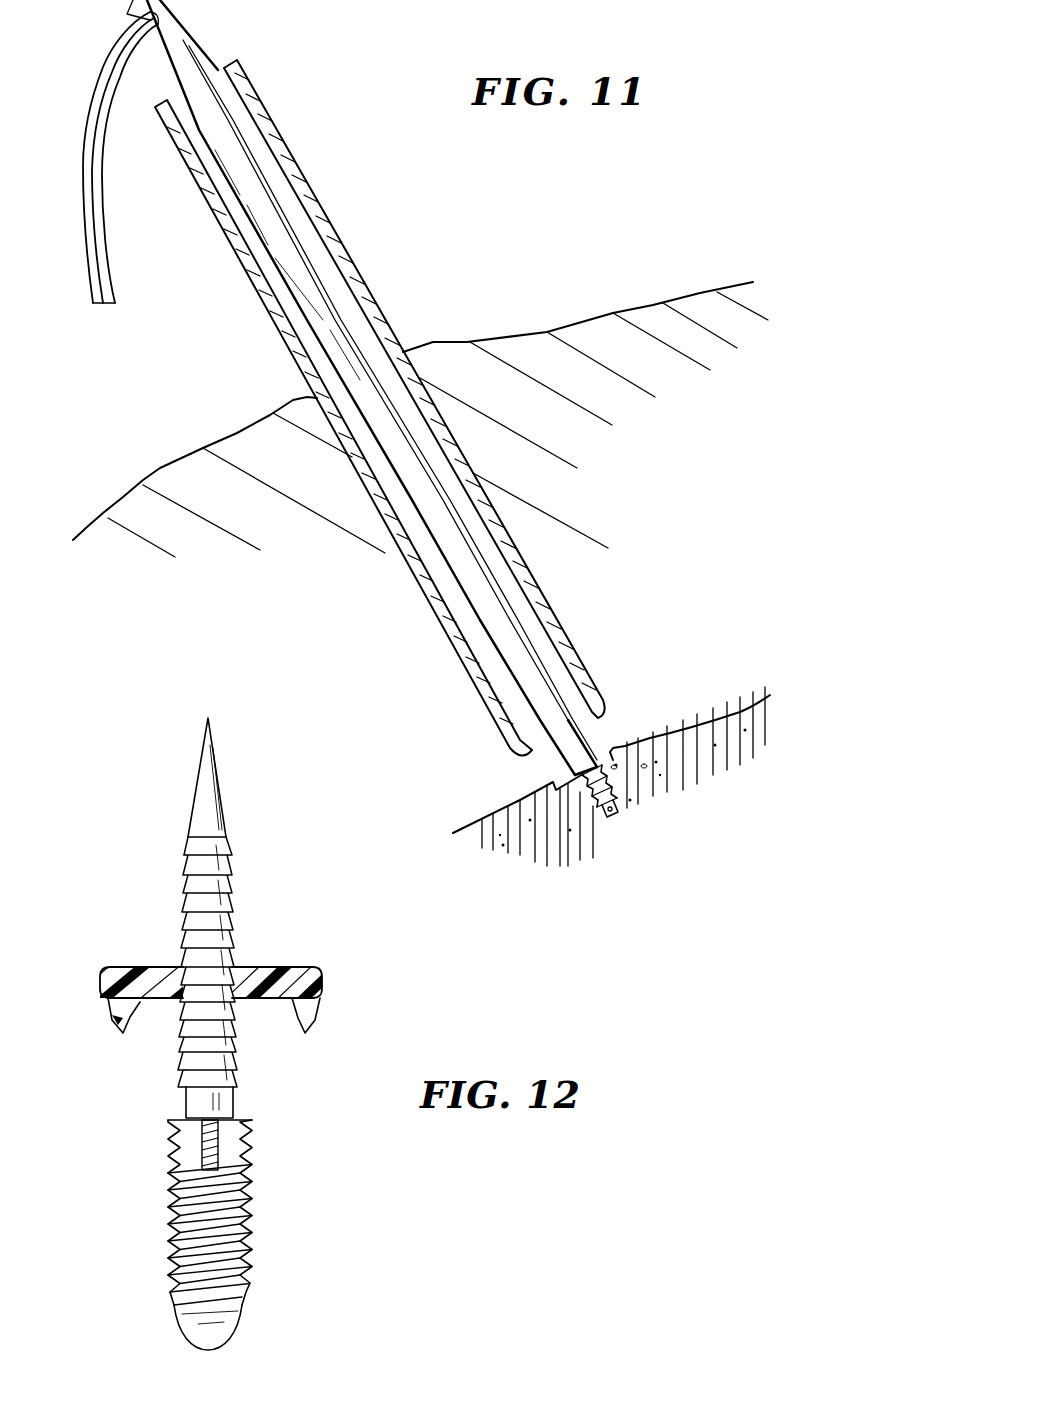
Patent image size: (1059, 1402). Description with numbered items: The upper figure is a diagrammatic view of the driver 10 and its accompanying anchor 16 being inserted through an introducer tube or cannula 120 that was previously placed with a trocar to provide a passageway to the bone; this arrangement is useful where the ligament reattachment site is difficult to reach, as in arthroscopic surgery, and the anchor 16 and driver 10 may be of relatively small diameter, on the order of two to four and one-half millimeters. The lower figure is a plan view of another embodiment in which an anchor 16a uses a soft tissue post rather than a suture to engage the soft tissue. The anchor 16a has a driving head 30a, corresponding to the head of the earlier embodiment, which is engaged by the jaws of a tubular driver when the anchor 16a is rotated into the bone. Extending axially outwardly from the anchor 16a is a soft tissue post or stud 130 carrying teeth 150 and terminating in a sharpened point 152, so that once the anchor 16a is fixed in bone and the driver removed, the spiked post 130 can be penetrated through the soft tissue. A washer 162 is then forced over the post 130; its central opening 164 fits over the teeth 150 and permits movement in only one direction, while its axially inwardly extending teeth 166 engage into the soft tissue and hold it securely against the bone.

In FIG. 11, the driver 10 is at (213, 60).
In FIG. 11, the introducer tube or cannula 120 is at (306, 179).
In FIG. 11, the anchor 16 is at (622, 796).
In FIG. 12, the sharpened point 152 is at (217, 770).
In FIG. 12, the soft tissue post or stud 130 is at (246, 873).
In FIG. 12, the teeth 150 is at (185, 938).
In FIG. 12, the central opening 164 is at (228, 1040).
In FIG. 12, the washer 162 is at (298, 970).
In FIG. 12, the axially inwardly extending teeth 166 is at (306, 1025).
In FIG. 12, the driving head 30a is at (260, 1139).
In FIG. 12, the anchor 16a is at (158, 1204).